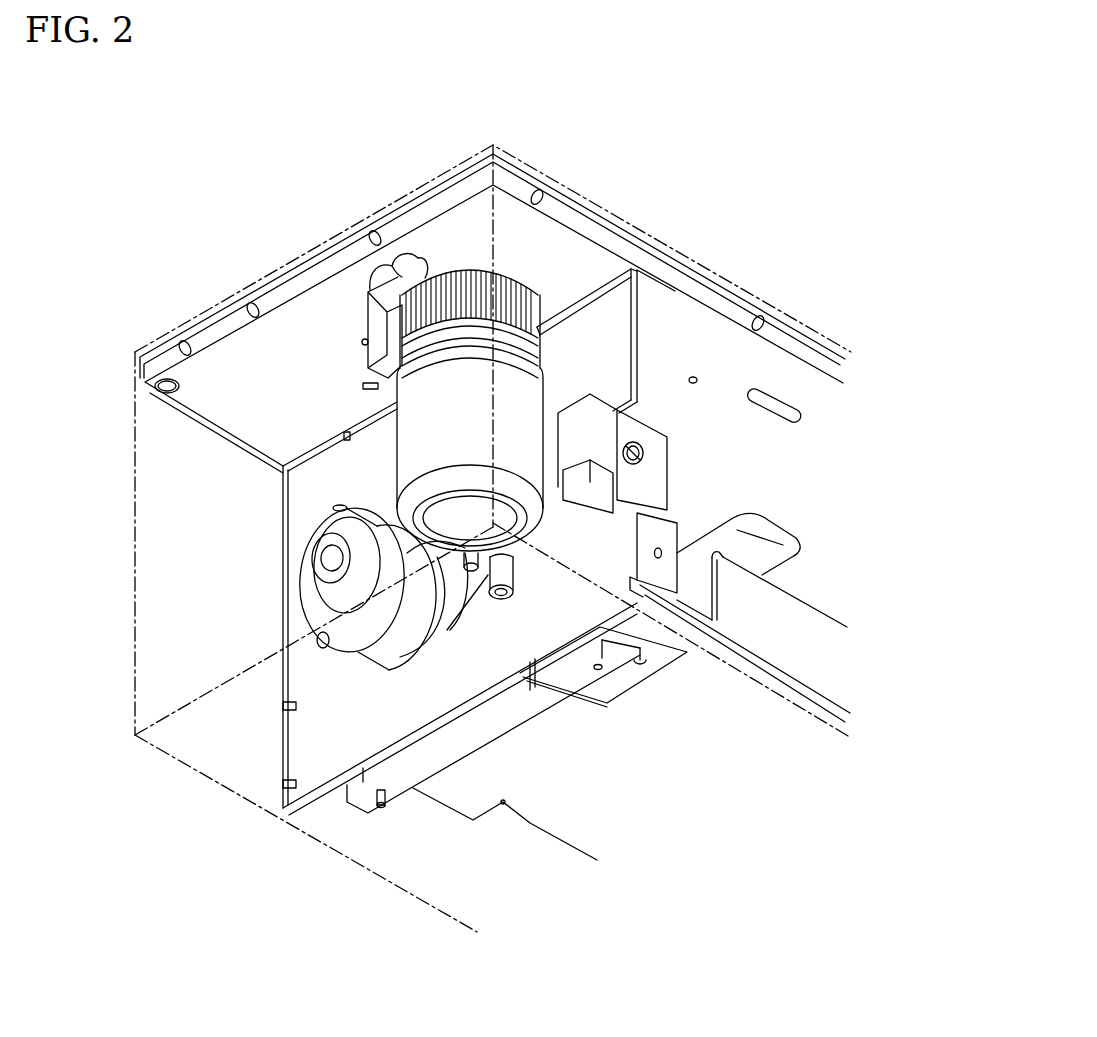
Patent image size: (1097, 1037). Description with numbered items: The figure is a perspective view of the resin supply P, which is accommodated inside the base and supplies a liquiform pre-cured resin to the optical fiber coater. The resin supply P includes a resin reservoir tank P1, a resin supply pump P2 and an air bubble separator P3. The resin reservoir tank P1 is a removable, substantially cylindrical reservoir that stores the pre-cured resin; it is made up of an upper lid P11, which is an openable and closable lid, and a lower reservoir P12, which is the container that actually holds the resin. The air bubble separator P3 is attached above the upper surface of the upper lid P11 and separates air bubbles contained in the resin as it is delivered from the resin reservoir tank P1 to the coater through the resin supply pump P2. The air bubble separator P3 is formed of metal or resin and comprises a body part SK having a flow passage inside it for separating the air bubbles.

The resin supply P is at (580, 257).
The resin reservoir tank P1 is at (528, 395).
The upper lid P11 is at (537, 333).
The lower reservoir P12 is at (533, 460).
The resin supply pump P2 is at (413, 650).
The air bubble separator P3 is at (400, 258).
The body part SK is at (377, 307).